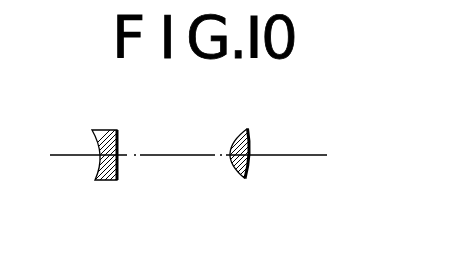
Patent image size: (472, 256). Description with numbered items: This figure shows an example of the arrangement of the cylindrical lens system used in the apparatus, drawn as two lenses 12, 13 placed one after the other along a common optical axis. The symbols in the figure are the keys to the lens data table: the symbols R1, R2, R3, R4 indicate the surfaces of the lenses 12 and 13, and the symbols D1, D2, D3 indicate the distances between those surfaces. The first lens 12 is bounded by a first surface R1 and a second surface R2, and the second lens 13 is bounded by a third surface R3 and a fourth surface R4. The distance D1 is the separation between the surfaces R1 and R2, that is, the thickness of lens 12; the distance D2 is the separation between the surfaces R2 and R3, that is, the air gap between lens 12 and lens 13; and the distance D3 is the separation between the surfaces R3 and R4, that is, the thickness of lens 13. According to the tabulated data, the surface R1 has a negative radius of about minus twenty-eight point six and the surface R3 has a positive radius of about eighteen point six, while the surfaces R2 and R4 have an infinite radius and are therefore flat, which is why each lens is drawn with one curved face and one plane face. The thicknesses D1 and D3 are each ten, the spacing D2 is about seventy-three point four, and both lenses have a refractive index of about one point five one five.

The lens 12 is at (118, 131).
The lens 13 is at (247, 128).
The distance between surfaces D1 is at (93, 151).
The distance between surfaces D2 is at (191, 155).
The distance between surfaces D3 is at (249, 154).
The lens surface R1 is at (97, 168).
The lens surface R2 is at (118, 168).
The lens surface R3 is at (235, 170).
The lens surface R4 is at (248, 170).